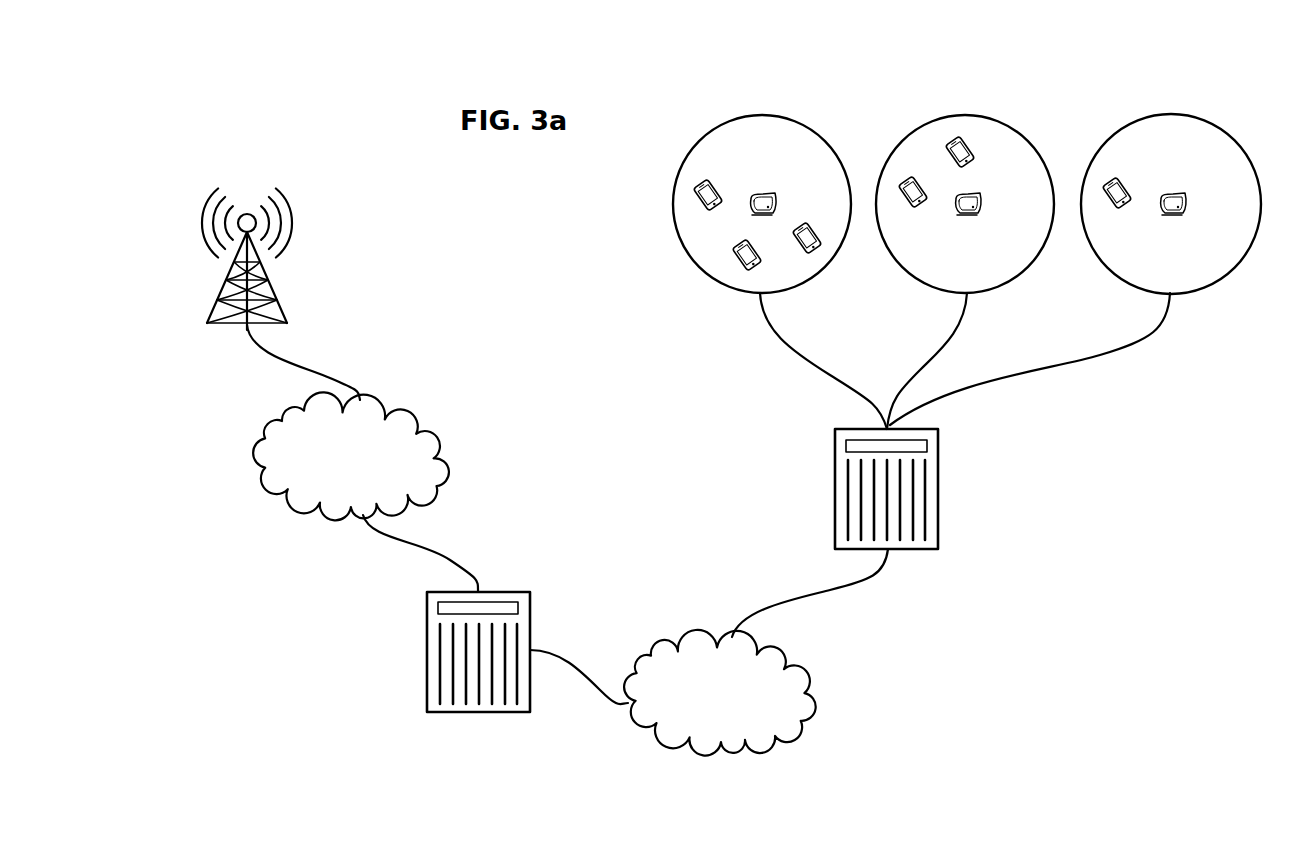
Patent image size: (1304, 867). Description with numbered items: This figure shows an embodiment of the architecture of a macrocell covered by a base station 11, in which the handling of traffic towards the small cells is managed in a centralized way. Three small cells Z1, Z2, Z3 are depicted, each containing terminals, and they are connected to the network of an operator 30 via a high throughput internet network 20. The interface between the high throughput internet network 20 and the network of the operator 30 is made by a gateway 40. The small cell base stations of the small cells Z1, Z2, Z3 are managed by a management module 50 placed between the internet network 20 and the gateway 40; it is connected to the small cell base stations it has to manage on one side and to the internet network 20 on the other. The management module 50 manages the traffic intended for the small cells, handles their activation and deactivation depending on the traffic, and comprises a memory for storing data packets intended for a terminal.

The base station 11 is at (300, 276).
The network of an operator 30 is at (463, 475).
The gateway 40 is at (412, 657).
The high throughput internet network 20 is at (832, 711).
The management module 50 is at (954, 494).
The small cell Z1 is at (760, 114).
The small cell Z2 is at (964, 114).
The small cell Z3 is at (1169, 114).